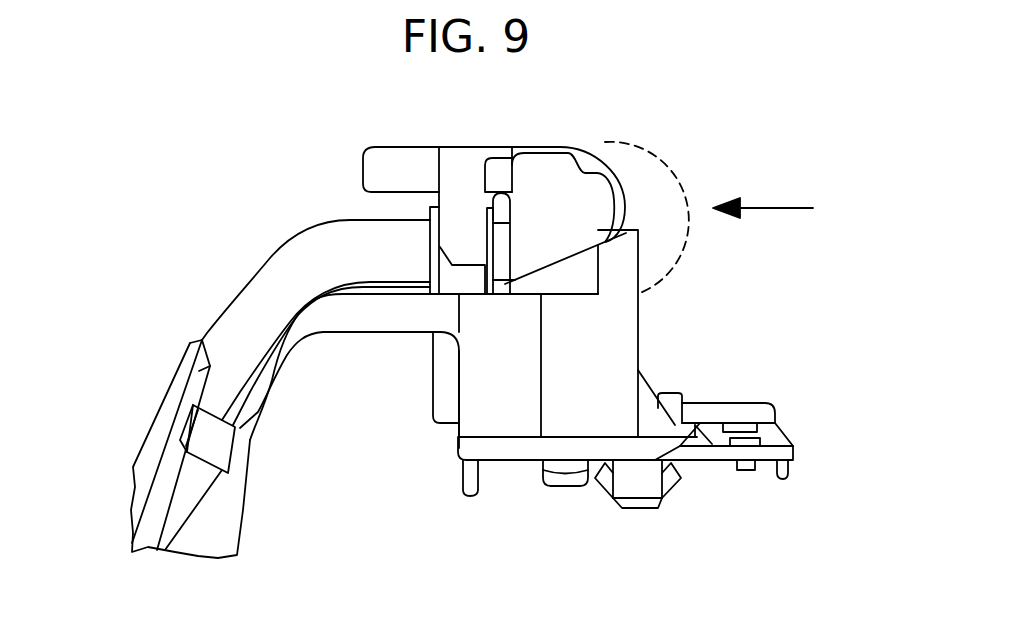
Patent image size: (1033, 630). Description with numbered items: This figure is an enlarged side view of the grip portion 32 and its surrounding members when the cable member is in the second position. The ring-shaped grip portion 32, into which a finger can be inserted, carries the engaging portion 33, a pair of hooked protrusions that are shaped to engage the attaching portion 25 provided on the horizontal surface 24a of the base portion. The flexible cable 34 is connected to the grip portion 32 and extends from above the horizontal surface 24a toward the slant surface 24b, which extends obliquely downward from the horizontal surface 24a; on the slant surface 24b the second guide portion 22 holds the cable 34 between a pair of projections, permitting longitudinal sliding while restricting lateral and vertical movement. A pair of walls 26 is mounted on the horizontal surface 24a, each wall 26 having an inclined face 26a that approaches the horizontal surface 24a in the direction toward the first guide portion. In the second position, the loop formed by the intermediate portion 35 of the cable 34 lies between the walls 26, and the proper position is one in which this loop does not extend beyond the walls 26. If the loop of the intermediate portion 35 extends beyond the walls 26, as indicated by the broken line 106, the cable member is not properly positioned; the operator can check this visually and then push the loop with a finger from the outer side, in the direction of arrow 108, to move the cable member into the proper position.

The second guide portion 22 is at (245, 473).
The horizontal surface 24a is at (374, 293).
The slant surface 24b is at (288, 340).
The attaching portion 25 is at (455, 278).
The wall 26 is at (623, 263).
The inclined face 26a is at (578, 247).
The grip portion 32 is at (403, 165).
The engaging portion 33 is at (462, 207).
The cable 34 is at (257, 370).
The intermediate portion 35 is at (616, 175).
The broken line 106 is at (680, 170).
The arrow 108 is at (785, 206).